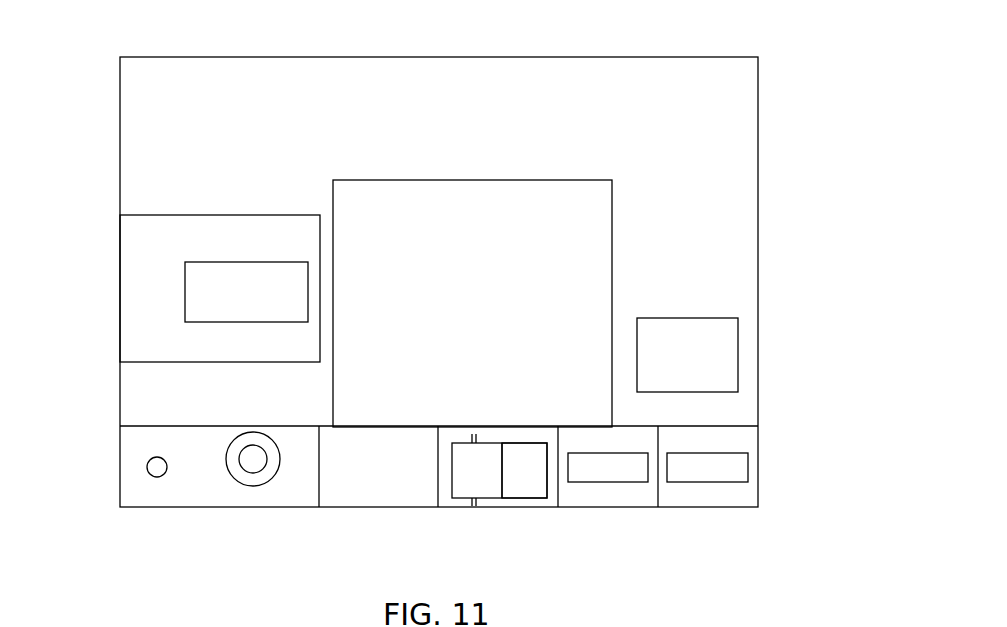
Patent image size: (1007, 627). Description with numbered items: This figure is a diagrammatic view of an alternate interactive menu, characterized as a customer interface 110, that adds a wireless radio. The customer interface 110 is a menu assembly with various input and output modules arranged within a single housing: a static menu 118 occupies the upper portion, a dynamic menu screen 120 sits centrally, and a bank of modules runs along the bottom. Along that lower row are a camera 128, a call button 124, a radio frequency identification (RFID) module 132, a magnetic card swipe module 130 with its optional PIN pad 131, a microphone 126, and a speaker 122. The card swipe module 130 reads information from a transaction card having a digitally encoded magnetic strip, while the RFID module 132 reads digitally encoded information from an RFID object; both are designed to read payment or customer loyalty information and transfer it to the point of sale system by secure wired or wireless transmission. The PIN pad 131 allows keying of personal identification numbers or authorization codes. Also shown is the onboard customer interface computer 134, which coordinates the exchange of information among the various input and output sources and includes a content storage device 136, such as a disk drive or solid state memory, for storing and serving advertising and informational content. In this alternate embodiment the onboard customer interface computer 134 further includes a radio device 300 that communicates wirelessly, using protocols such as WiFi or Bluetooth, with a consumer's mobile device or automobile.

The customer interface 110 is at (787, 153).
The static menu 118 is at (184, 83).
The dynamic menu screen 120 is at (412, 215).
The speaker 122 is at (730, 482).
The call button 124 is at (228, 467).
The microphone 126 is at (627, 482).
The camera 128 is at (147, 467).
The magnetic card swipe module 130 is at (481, 500).
The PIN pad 131 is at (532, 500).
The radio frequency identification (RFID) module 132 is at (340, 492).
The onboard customer interface computer 134 is at (143, 255).
The content storage device 136 is at (198, 308).
The radio device 300 is at (738, 352).